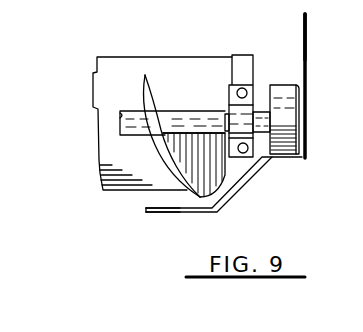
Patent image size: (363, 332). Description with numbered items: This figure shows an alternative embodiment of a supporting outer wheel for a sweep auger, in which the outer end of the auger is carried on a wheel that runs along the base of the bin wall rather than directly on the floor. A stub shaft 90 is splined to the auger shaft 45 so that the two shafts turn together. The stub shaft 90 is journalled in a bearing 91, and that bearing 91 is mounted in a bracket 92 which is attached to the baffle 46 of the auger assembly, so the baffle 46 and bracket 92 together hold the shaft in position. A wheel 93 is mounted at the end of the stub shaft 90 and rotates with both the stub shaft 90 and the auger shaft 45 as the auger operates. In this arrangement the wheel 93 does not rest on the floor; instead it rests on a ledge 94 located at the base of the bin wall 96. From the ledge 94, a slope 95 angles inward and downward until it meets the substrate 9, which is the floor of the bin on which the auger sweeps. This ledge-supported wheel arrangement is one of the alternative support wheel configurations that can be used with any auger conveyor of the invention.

The substrate 9 is at (152, 211).
The auger shaft 45 is at (112, 147).
The baffle 46 is at (111, 69).
The stub shaft 90 is at (262, 112).
The bearing 91 is at (236, 110).
The bracket 92 is at (247, 56).
The wheel 93 is at (288, 108).
The ledge 94 is at (303, 158).
The slope 95 is at (238, 192).
The bin wall 96 is at (298, 40).